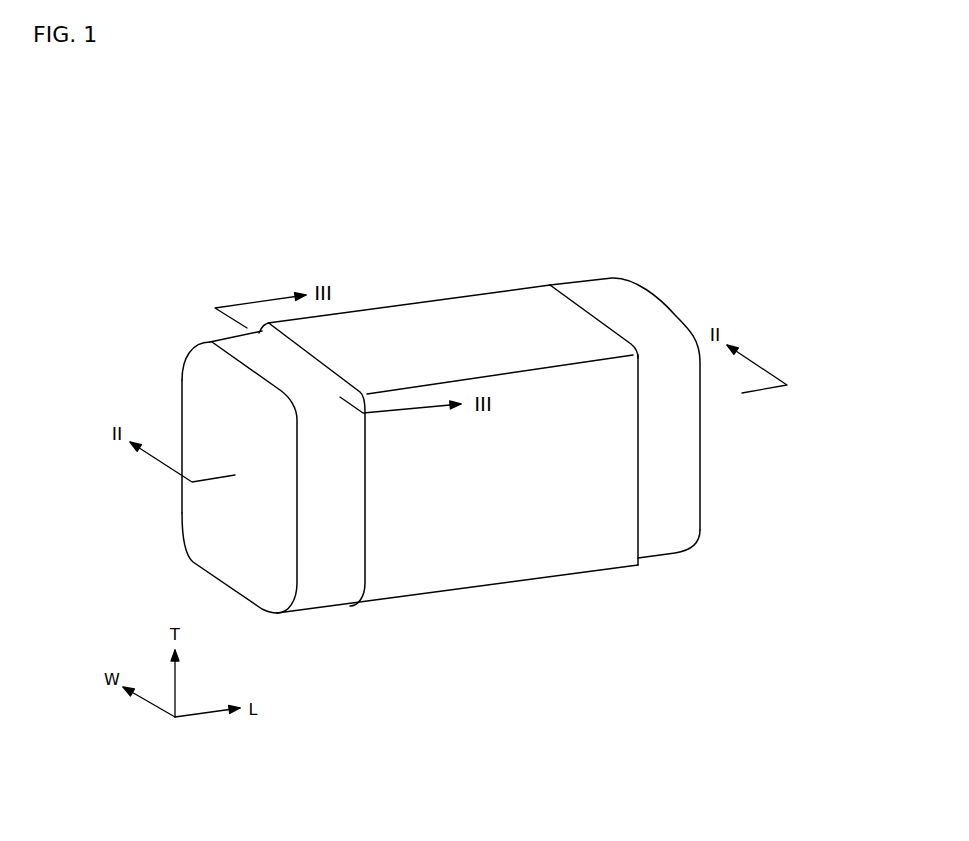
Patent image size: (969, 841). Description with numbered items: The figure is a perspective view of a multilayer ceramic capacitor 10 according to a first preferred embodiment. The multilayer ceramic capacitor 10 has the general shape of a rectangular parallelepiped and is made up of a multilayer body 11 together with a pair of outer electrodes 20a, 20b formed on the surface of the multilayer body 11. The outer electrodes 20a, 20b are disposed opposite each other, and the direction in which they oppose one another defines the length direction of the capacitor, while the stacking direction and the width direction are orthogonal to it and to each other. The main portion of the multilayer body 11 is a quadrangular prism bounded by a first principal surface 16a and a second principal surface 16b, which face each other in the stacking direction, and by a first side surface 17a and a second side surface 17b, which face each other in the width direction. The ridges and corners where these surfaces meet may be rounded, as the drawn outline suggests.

The multilayer ceramic capacitor 10 is at (225, 240).
The multilayer body 11 is at (453, 295).
The first principal surface 16a is at (496, 313).
The second principal surface 16b is at (445, 573).
The first side surface 17a is at (423, 323).
The second side surface 17b is at (590, 535).
The outer electrode 20a is at (198, 395).
The outer electrode 20b is at (598, 300).